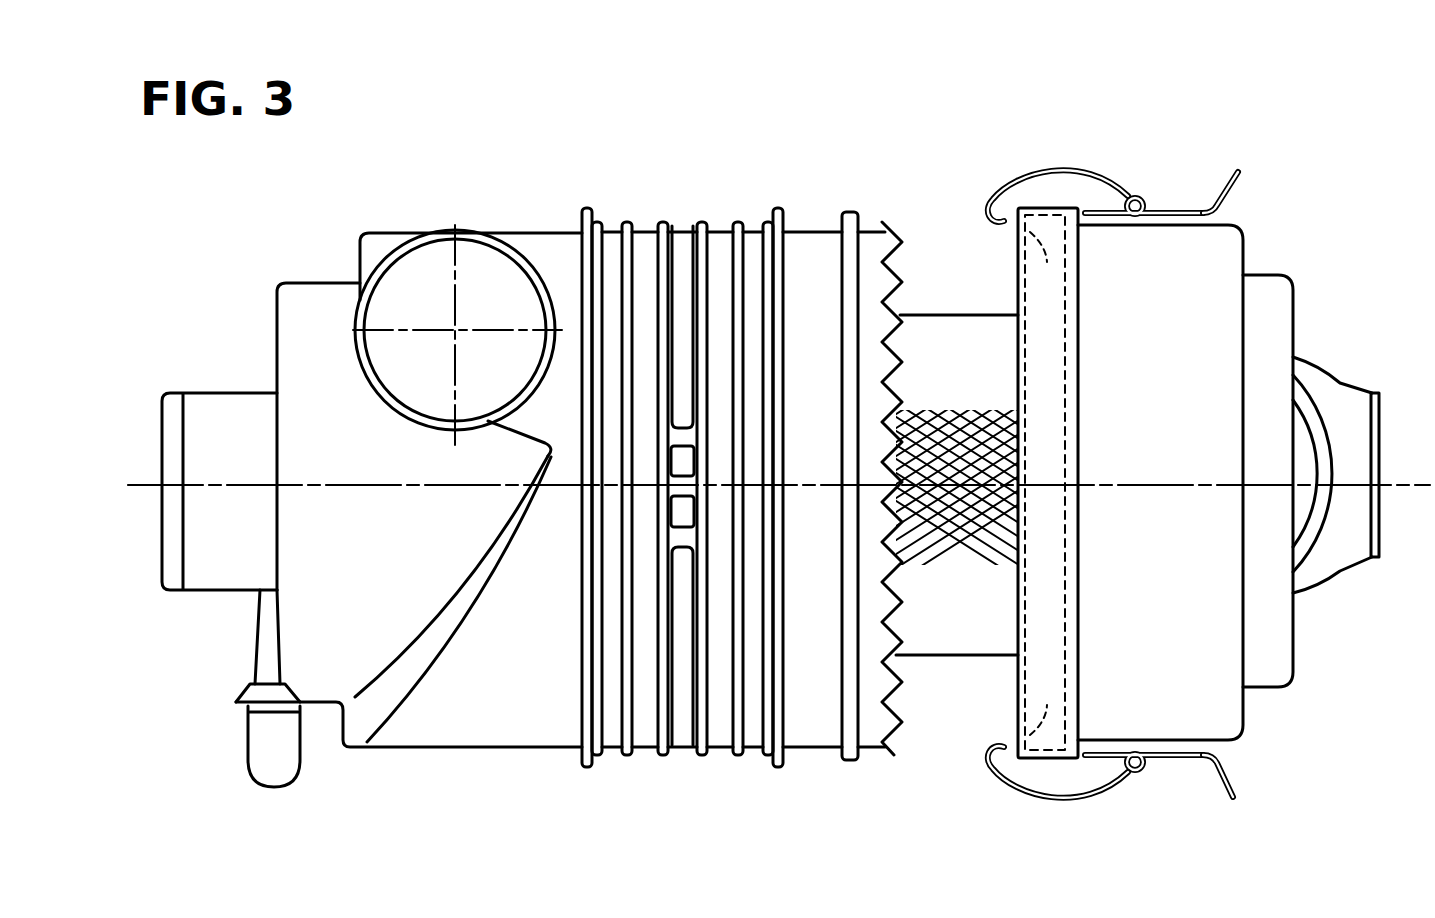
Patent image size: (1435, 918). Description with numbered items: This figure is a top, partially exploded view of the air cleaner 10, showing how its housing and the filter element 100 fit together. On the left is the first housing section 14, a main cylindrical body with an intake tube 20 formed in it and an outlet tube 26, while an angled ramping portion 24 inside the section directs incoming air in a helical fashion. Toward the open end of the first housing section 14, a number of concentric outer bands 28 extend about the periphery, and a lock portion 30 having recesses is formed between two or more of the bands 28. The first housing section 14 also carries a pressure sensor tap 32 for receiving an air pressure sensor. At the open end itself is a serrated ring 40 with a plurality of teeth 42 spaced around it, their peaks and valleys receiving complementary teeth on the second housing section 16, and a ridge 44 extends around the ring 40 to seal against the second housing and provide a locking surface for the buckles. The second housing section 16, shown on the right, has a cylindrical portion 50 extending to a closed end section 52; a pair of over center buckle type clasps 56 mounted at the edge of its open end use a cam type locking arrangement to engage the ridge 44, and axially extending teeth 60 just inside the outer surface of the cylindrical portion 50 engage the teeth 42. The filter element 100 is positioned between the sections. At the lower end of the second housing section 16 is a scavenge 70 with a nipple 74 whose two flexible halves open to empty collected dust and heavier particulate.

The air cleaner 10 is at (1078, 88).
The first housing section 14 is at (600, 188).
The second housing section 16 is at (1214, 167).
The intake tube 20 is at (478, 243).
The angled ramping portion 24 is at (468, 625).
The outlet tube 26 is at (210, 405).
The concentric outer bands 28 is at (663, 228).
The lock portion 30 is at (705, 517).
The pressure sensor tap 32 is at (258, 649).
The serrated ring 40 is at (896, 770).
The teeth 42 is at (905, 254).
The ridge 44 is at (847, 210).
The cylindrical portion 50 is at (1232, 232).
The closed end section 52 is at (1295, 312).
The over center buckle type clasps 56 is at (1090, 181).
The axially extending teeth 60 is at (1079, 246).
The scavenge 70 is at (1325, 368).
The nipple 74 is at (1368, 558).
The filter element 100 is at (957, 321).